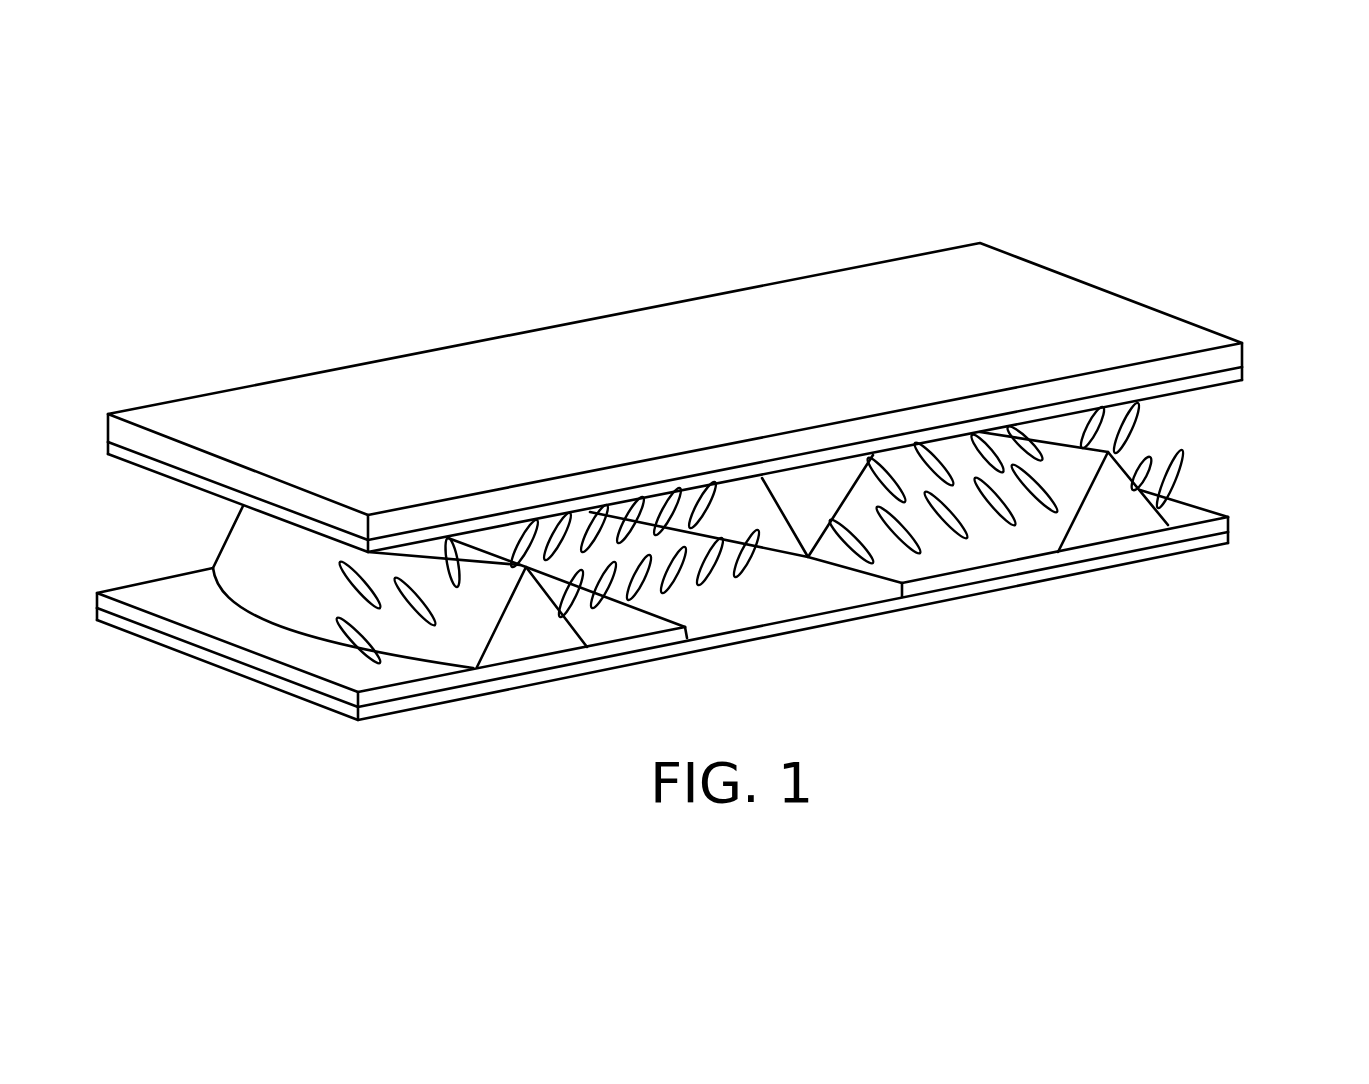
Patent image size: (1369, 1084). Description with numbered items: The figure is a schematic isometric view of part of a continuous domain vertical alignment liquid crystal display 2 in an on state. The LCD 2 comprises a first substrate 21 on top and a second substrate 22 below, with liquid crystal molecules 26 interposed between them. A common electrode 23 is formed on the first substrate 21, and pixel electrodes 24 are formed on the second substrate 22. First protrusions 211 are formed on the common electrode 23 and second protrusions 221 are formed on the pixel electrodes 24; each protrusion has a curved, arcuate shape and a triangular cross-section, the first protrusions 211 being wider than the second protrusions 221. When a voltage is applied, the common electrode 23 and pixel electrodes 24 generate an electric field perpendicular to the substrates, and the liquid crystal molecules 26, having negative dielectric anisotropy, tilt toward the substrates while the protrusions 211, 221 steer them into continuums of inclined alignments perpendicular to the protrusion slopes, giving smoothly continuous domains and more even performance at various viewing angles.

The continuous domain vertical alignment liquid crystal display 2 is at (88, 418).
The first substrate 21 is at (1228, 355).
The first protrusions 211 is at (808, 480).
The common electrode 23 is at (1232, 377).
The second substrate 22 is at (1182, 548).
The second protrusions 221 is at (1113, 497).
The pixel electrodes 24 is at (1217, 525).
The liquid crystal molecules 26 is at (1180, 475).